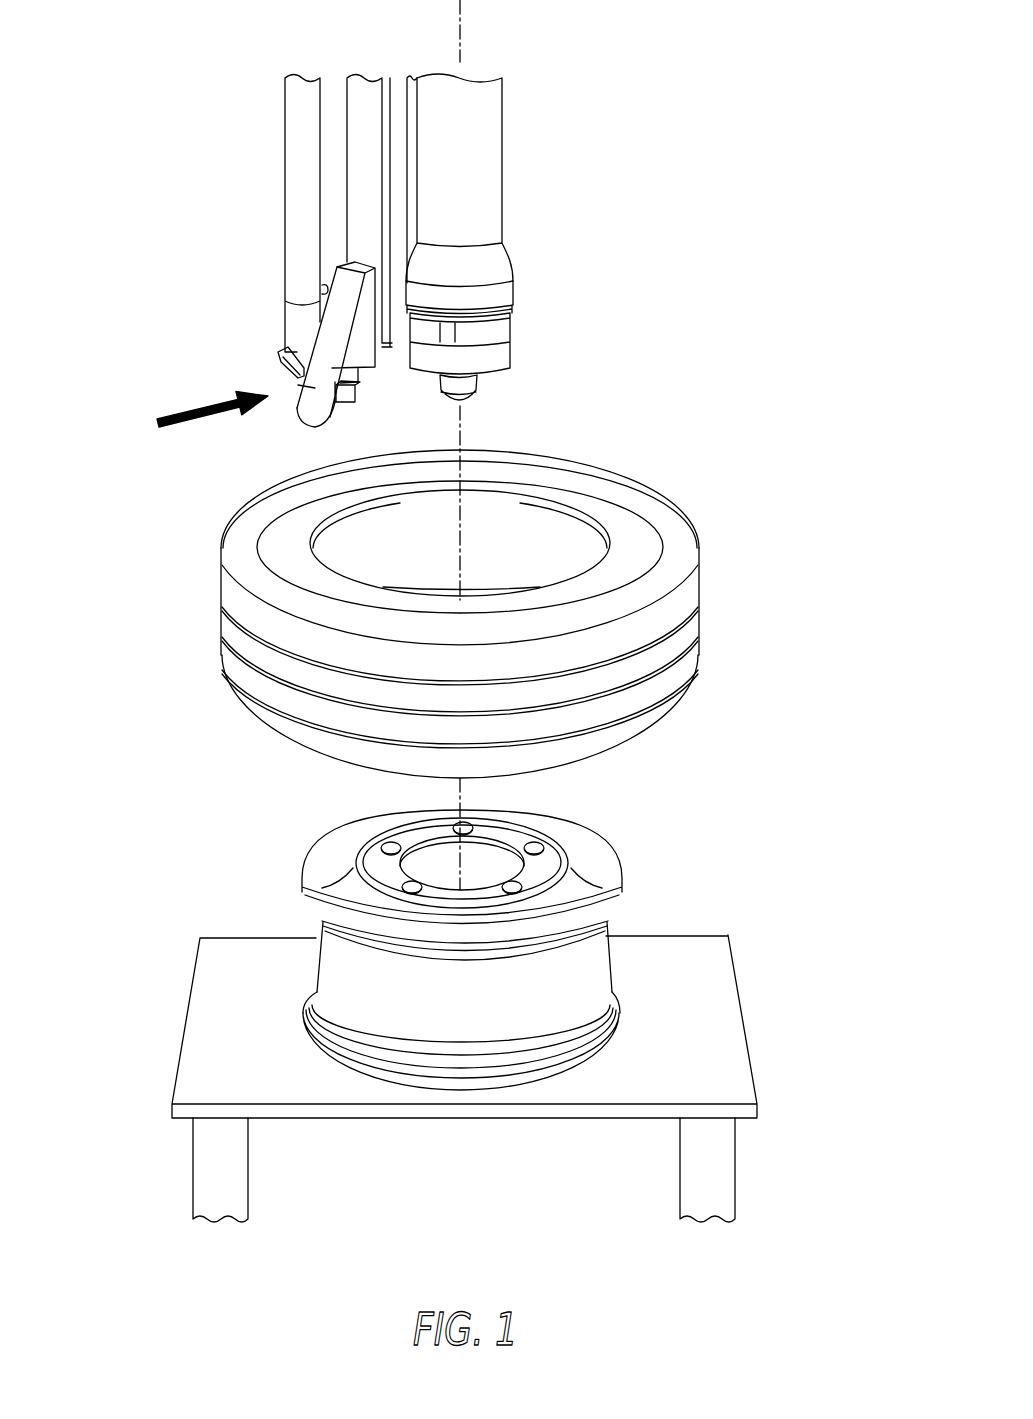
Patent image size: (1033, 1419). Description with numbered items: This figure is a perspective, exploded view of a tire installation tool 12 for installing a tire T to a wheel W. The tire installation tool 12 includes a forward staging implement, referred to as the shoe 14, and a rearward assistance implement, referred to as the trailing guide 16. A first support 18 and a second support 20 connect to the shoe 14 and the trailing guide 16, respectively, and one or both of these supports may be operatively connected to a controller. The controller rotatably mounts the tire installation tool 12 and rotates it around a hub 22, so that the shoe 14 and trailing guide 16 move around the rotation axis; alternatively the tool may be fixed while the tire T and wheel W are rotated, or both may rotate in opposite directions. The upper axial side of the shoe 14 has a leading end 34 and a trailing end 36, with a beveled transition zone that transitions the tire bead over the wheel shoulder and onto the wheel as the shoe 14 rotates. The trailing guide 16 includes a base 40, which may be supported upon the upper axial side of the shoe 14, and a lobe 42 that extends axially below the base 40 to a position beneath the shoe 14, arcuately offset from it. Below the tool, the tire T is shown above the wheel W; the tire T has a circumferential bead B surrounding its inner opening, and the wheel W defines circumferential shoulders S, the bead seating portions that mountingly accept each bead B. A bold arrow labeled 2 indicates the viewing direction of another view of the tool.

The tire installation tool 12 is at (178, 136).
The shoe 14 is at (259, 364).
The trailing guide 16 is at (339, 428).
The first support 18 is at (292, 104).
The second support 20 is at (356, 93).
The hub 22 is at (493, 107).
The leading end 34 is at (279, 355).
The trailing end 36 is at (357, 397).
The base 40 is at (332, 322).
The lobe 42 is at (305, 406).
The view direction arrow of FIG. 2 is at (200, 419).
The bead B is at (591, 514).
The tire T is at (698, 597).
The shoulder S is at (622, 900).
The wheel W is at (594, 969).